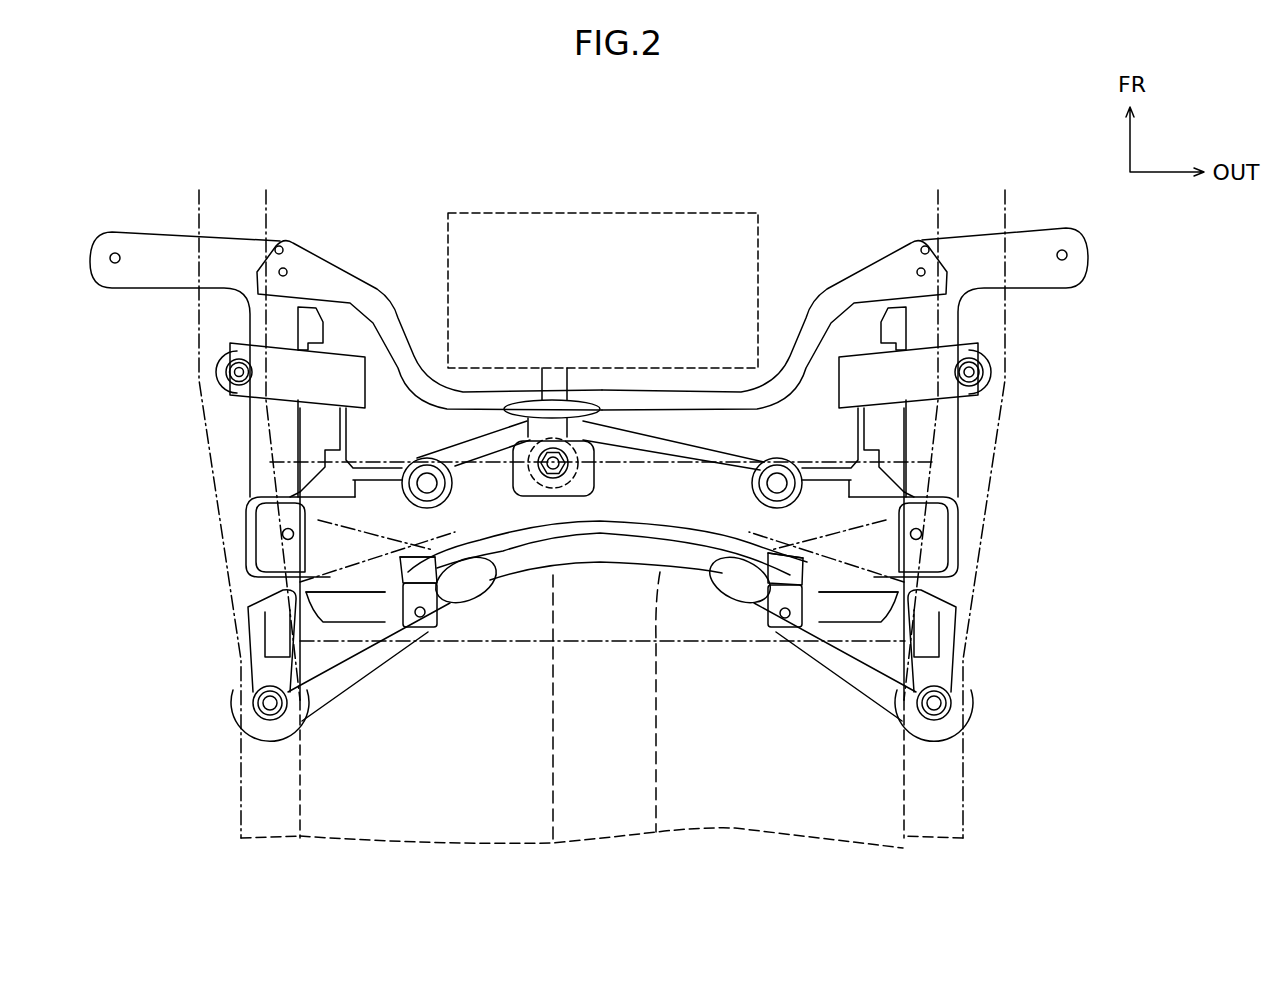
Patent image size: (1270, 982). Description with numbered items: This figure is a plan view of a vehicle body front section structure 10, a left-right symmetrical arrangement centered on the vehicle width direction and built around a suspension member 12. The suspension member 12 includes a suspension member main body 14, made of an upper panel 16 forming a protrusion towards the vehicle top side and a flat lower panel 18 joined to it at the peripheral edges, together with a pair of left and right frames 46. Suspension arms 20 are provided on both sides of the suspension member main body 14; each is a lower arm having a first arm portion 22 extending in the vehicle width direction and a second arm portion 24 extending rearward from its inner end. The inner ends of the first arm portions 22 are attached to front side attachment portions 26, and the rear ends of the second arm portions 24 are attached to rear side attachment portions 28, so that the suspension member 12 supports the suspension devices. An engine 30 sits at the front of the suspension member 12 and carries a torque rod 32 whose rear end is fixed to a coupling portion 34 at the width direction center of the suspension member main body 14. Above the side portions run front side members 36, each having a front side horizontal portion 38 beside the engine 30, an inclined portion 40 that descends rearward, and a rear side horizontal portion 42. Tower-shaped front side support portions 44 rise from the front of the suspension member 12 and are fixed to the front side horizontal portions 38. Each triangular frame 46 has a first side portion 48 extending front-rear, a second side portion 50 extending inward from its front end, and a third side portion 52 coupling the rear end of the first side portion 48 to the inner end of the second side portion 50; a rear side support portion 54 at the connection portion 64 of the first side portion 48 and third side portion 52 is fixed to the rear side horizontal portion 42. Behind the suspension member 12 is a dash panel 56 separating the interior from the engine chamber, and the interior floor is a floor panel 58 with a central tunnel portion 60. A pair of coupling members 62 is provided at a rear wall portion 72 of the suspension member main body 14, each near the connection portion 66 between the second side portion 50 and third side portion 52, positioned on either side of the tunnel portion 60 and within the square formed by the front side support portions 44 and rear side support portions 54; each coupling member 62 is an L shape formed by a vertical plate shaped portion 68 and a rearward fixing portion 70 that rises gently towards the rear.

The vehicle body front section structure 10 is at (718, 166).
The suspension member 12 is at (499, 372).
The suspension member main body 14 is at (672, 378).
The upper panel 16 is at (716, 428).
The lower panel 18 is at (687, 575).
The suspension arm 20 is at (165, 223).
The first arm portion 22 is at (158, 289).
The second arm portion 24 is at (255, 455).
The front side attachment portion 26 is at (298, 238).
The rear side attachment portion 28 is at (222, 540).
The engine 30 is at (590, 213).
The torque rod 32 is at (566, 385).
The coupling portion 34 is at (603, 468).
The front side member 36 is at (203, 496).
The front side horizontal portion 38 is at (205, 372).
The inclined portion 40 is at (240, 586).
The rear side horizontal portion 42 is at (240, 793).
The front side support portion 44 is at (228, 407).
The frame 46 is at (362, 705).
The first side portion 48 is at (245, 620).
The second side portion 50 is at (387, 530).
The third side portion 52 is at (395, 660).
The rear side support portion 54 is at (258, 700).
The dash panel 56 is at (632, 462).
The floor panel 58 is at (728, 832).
The tunnel portion 60 is at (553, 795).
The coupling member 62 is at (455, 600).
The connection portion 64 is at (232, 720).
The connection portion 66 is at (495, 600).
The plate shaped portion 68 is at (445, 540).
The fixing portion 70 is at (443, 623).
The rear wall portion 72 is at (596, 553).